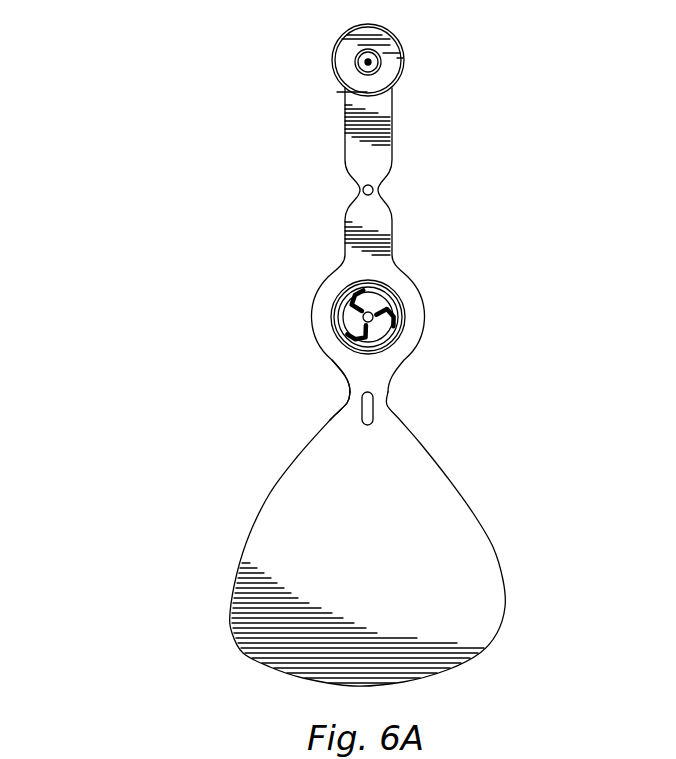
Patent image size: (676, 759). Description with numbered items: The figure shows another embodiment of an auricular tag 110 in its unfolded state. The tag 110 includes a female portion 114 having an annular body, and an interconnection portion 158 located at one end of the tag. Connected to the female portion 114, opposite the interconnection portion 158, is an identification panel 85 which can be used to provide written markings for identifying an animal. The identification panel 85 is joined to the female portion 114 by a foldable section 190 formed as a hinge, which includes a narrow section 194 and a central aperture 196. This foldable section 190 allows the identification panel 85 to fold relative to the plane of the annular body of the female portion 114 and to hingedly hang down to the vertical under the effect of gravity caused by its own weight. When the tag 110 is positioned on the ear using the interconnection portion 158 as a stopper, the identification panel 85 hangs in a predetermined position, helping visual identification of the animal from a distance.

The tag 110 is at (198, 237).
The female portion 114 is at (453, 320).
The interconnection portion 158 is at (377, 164).
The foldable section 190 is at (382, 404).
The narrow section 194 is at (351, 390).
The central aperture 196 is at (355, 412).
The identification panel 85 is at (437, 508).